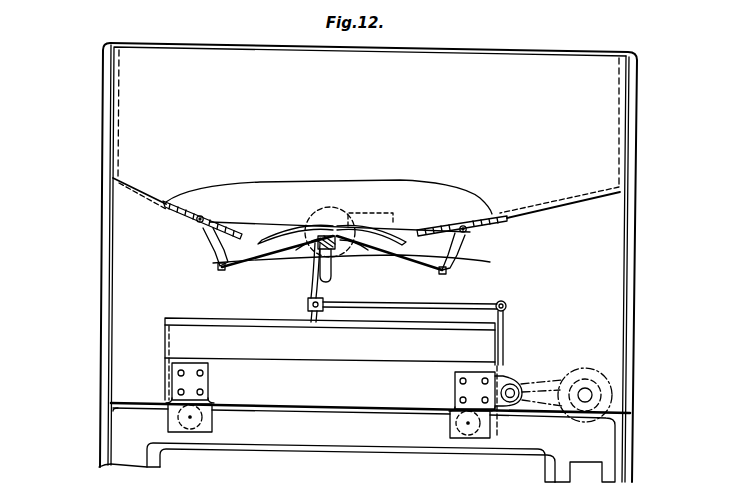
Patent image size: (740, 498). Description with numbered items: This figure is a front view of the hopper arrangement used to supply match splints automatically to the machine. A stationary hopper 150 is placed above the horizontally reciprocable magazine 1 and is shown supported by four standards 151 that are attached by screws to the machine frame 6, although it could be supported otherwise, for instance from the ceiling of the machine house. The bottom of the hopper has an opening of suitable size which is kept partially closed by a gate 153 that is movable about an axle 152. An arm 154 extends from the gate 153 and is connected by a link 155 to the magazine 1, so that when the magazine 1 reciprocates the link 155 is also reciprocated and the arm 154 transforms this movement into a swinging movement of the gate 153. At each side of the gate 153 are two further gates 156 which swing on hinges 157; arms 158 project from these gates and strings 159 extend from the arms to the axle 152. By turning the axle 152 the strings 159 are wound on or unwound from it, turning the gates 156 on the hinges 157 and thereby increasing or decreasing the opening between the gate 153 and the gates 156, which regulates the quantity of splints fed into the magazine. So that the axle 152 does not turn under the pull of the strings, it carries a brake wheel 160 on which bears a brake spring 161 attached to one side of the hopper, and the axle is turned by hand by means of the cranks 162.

The magazine 1 is at (331, 378).
The machine frame 6 is at (328, 437).
The hopper 150 is at (366, 190).
The standards 151 is at (101, 343).
The axle 152 is at (318, 246).
The gate 153 is at (363, 243).
The arm 154 is at (308, 303).
The link 155 is at (464, 305).
The gates 156 is at (228, 230).
The hinges 157 is at (196, 219).
The arms 158 is at (211, 246).
The strings 159 is at (236, 259).
The brake wheel 160 is at (318, 214).
The brake spring 161 is at (362, 214).
The cranks 162 is at (332, 279).